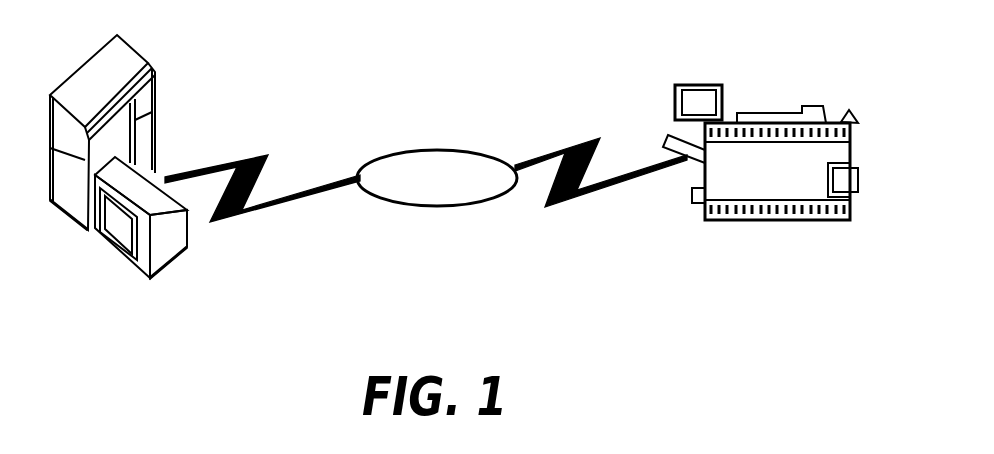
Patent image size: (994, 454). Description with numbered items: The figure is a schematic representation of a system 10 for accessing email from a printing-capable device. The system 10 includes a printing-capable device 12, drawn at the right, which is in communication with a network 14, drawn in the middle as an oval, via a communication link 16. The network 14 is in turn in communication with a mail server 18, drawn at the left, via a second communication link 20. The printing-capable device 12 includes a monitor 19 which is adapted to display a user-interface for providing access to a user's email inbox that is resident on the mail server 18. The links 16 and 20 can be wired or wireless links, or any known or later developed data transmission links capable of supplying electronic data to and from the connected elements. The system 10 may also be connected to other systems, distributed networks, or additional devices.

The system 10 is at (486, 48).
The printing-capable device 12 is at (783, 74).
The network 14 is at (432, 149).
The communication link 16 is at (565, 146).
The mail server 18 is at (191, 80).
The monitor 19 is at (699, 84).
The second communication link 20 is at (238, 160).